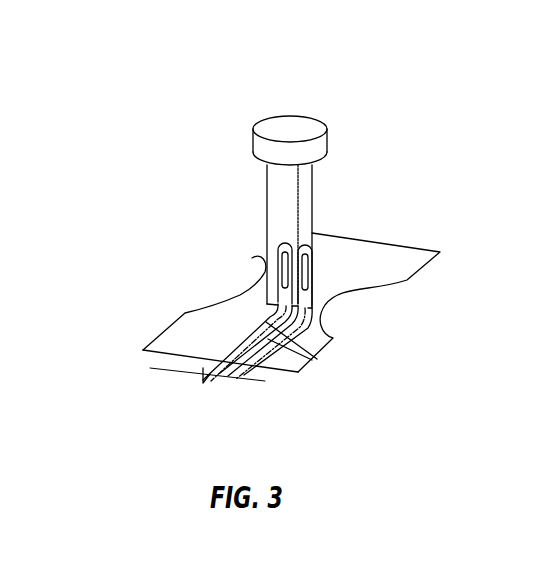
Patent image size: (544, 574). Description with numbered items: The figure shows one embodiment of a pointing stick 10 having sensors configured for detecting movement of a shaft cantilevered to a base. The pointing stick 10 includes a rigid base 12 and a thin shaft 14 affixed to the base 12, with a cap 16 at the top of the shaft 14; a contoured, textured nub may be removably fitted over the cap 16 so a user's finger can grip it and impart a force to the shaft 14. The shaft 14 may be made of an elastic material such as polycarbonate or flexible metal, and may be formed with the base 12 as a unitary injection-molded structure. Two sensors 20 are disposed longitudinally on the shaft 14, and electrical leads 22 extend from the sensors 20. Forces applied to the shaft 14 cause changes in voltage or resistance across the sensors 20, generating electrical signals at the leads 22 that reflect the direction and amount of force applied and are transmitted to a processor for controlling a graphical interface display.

The pointing stick 10 is at (210, 118).
The rigid base 12 is at (170, 327).
The shaft 14 is at (310, 197).
The cap 16 is at (298, 125).
The sensors 20 is at (283, 270).
The electrical leads 22 is at (305, 368).